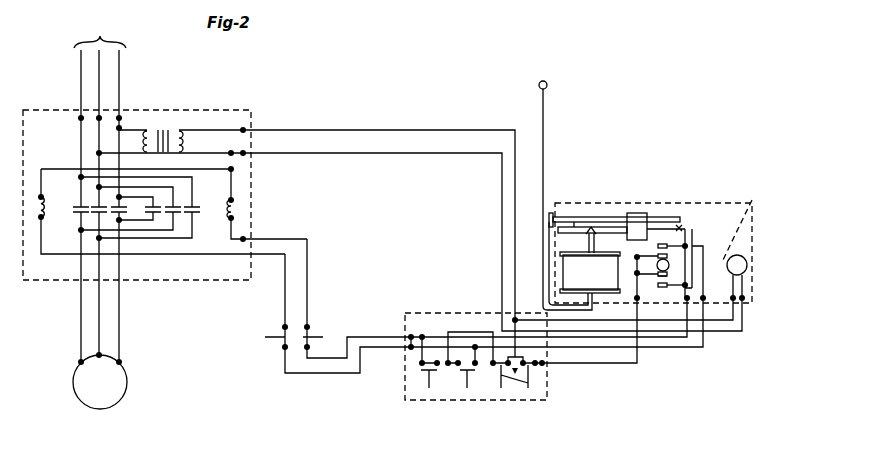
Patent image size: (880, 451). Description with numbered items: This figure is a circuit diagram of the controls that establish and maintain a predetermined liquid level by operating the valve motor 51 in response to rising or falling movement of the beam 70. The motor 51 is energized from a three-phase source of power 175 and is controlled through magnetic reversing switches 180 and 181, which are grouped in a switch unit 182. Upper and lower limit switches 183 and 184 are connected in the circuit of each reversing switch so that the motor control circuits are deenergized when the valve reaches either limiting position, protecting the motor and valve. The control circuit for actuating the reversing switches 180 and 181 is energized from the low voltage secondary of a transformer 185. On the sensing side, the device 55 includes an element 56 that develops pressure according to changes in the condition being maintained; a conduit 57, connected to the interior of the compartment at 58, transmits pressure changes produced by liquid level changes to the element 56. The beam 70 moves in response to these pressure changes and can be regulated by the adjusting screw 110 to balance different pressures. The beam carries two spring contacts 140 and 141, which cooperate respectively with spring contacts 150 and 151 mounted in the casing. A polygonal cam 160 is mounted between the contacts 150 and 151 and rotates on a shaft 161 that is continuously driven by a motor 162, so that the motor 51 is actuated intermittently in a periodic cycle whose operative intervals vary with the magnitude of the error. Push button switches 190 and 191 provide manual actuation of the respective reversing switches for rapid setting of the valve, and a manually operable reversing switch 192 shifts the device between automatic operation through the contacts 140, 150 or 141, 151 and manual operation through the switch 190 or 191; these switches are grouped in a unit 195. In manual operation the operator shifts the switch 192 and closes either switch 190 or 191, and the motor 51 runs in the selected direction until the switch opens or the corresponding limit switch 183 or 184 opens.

The three-phase source of power 175 is at (100, 188).
The adjusting motor 51 is at (117, 393).
The magnetic reversing switch 180 is at (70, 203).
The magnetic reversing switch 181 is at (207, 202).
The switch unit 182 is at (237, 108).
The upper limit switch 183 is at (277, 348).
The lower limit switch 184 is at (310, 326).
The transformer 185 is at (167, 124).
The unit 195 is at (440, 312).
The push button switch 190 is at (462, 372).
The push button switch 191 is at (423, 372).
The manually operable reversing switch 192 is at (513, 380).
The connection point 58 is at (547, 83).
The conduit 57 is at (546, 114).
The adjusting screw 110 is at (575, 215).
The element 56 is at (605, 262).
The polygonal cam 160 is at (630, 225).
The spring contact 150 is at (657, 254).
The spring contact 140 is at (664, 244).
The spring contact 141 is at (662, 288).
The spring contact 151 is at (656, 276).
The beam 70 is at (680, 228).
The device 55 is at (737, 202).
The shaft 161 is at (749, 222).
The motor 162 is at (748, 259).